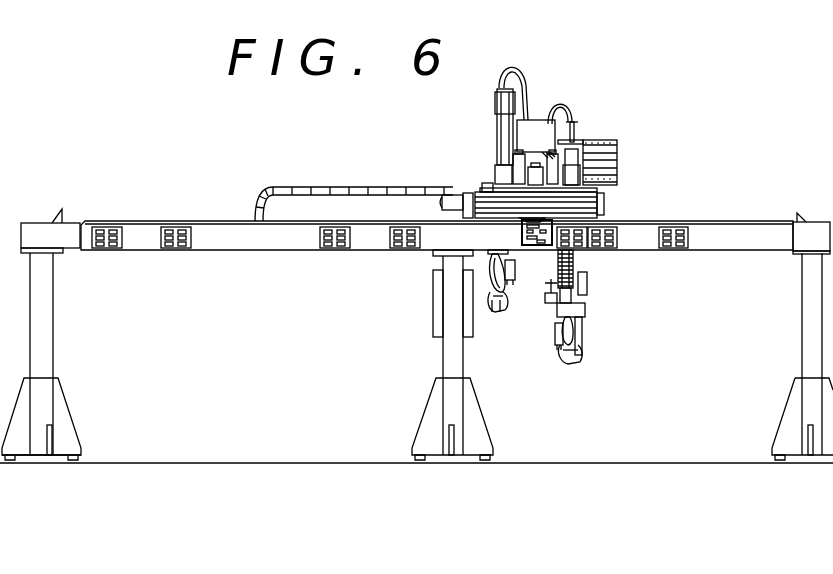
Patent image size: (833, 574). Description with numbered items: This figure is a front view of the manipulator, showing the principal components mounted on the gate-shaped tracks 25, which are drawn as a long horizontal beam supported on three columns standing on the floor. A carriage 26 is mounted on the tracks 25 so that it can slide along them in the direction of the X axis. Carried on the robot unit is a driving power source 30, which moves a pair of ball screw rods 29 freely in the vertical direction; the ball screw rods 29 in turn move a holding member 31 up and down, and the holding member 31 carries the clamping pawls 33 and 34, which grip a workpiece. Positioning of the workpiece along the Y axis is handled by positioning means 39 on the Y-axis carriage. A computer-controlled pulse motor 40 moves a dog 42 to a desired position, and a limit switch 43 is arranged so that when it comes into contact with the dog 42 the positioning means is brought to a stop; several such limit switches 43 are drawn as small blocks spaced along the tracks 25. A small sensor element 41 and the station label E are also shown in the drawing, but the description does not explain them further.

The gate-shaped tracks 25 is at (720, 240).
The carriage 26 is at (607, 193).
The ball screw rods 29 is at (575, 265).
The driving power source 30 is at (539, 175).
The holding member 31 is at (509, 249).
The clamping pawl 33 is at (505, 295).
The clamping pawl 34 is at (492, 306).
The positioning means 39 is at (443, 155).
The pulse motor 40 is at (449, 200).
The sensor 41 is at (484, 184).
The dog 42 is at (517, 222).
The limit switch 43 is at (118, 246).
The station E is at (716, 207).